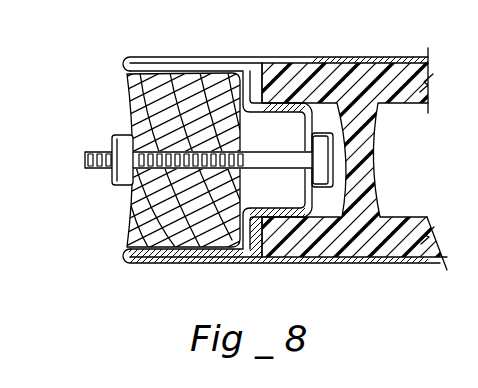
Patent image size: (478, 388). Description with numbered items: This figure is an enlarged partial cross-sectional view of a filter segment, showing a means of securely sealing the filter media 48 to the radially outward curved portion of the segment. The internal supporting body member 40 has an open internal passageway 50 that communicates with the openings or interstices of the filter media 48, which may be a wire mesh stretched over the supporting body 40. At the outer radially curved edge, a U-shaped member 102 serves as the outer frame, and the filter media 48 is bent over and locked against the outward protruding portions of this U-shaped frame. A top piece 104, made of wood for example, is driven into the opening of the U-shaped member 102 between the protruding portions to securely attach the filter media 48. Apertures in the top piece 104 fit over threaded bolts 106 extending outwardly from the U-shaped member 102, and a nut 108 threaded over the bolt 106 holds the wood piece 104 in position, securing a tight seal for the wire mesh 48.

The internal supporting body member 40 is at (375, 137).
The filter media 48 is at (160, 57).
The open internal passageway 50 is at (412, 190).
The U-shaped member 102 is at (218, 57).
The top piece 104 is at (133, 98).
The threaded bolt 106 is at (158, 171).
The nut 108 is at (112, 145).